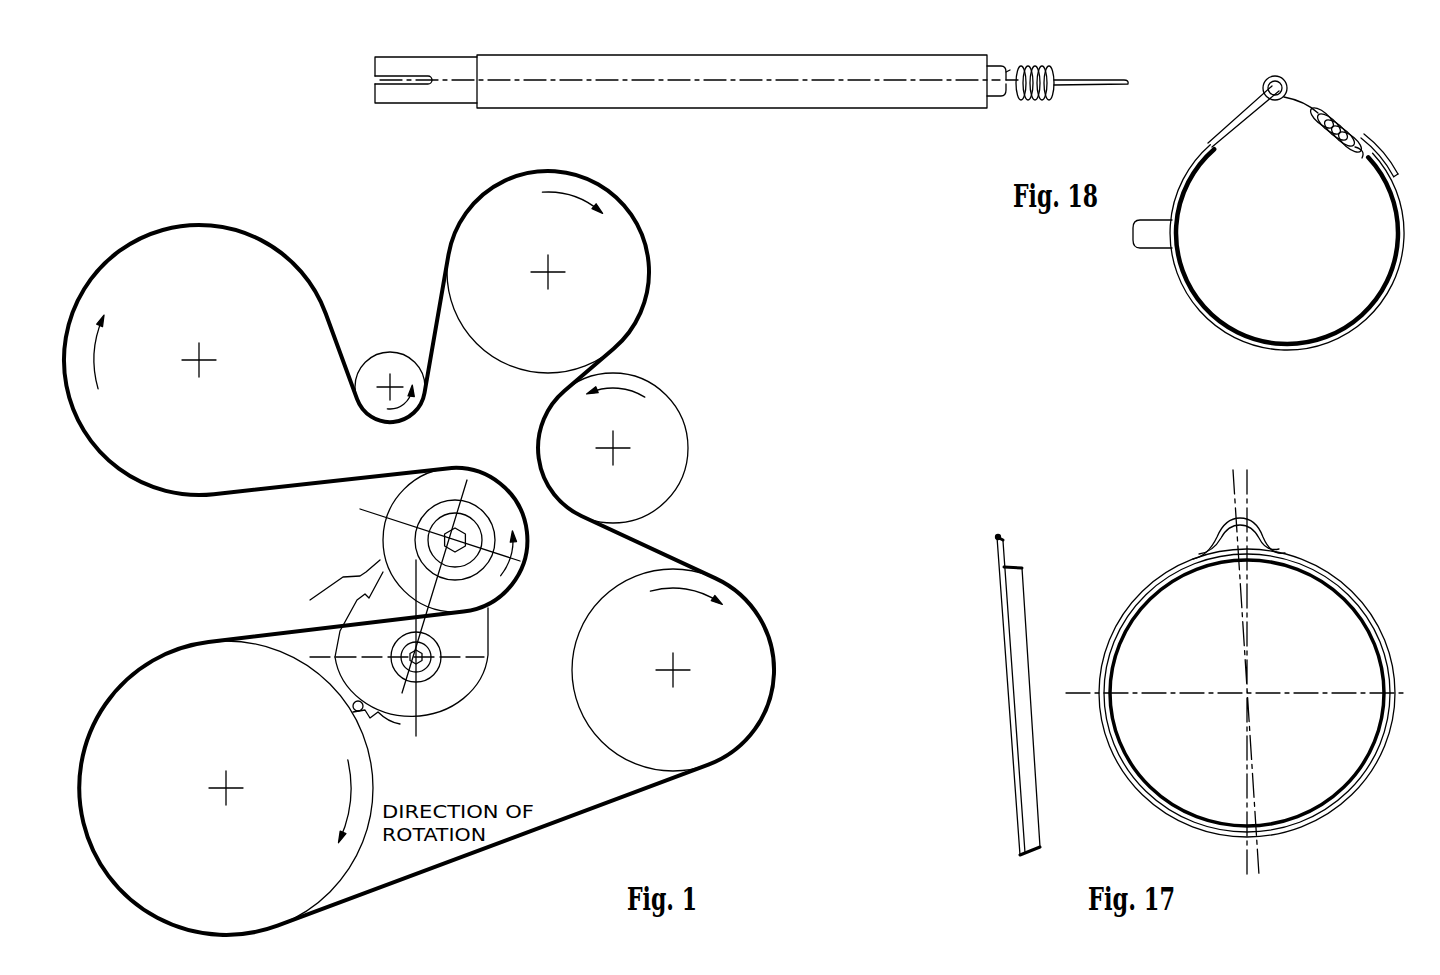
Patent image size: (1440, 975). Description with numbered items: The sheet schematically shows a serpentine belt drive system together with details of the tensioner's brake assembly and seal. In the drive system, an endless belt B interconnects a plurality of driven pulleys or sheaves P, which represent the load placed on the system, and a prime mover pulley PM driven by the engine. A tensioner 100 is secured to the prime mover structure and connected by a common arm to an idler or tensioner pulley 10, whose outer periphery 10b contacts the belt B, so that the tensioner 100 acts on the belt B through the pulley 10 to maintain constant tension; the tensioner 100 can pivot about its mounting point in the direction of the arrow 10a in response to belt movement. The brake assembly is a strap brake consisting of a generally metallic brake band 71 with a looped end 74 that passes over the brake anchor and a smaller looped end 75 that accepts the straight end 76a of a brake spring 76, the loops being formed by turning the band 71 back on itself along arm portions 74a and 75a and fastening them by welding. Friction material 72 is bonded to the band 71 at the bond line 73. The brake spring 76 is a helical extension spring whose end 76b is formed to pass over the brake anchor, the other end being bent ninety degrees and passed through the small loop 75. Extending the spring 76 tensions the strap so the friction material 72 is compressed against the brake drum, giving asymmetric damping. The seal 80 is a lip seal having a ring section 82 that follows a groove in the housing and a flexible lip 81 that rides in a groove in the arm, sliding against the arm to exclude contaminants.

In FIG. 1, the endless belt B is at (558, 820).
In FIG. 1, the driven pulleys P is at (150, 245).
In FIG. 1, the prime mover pulley PM is at (177, 663).
In FIG. 1, the tensioner pulley 10 is at (390, 580).
In FIG. 1, the arrow 10a is at (501, 508).
In FIG. 1, the outer periphery 10b is at (382, 562).
In FIG. 1, the tensioner 100 is at (465, 712).
In FIG. 18, the brake band 71 is at (445, 105).
In FIG. 18, the friction material 72 is at (560, 100).
In FIG. 18, the bond line 73 is at (1152, 250).
In FIG. 18, the looped end 74 is at (375, 102).
In FIG. 18, the loop arm 74a is at (1230, 128).
In FIG. 18, the looped end 75 is at (1365, 170).
In FIG. 18, the hook tab 75a is at (1383, 170).
In FIG. 18, the brake spring 76 is at (1032, 100).
In FIG. 18, the straight end 76a is at (1010, 70).
In FIG. 18, the spring end 76b is at (1128, 86).
In FIG. 17, the lip seal 80 is at (1157, 577).
In FIG. 17, the key 81 is at (1021, 567).
In FIG. 17, the ring section 82 is at (1000, 535).